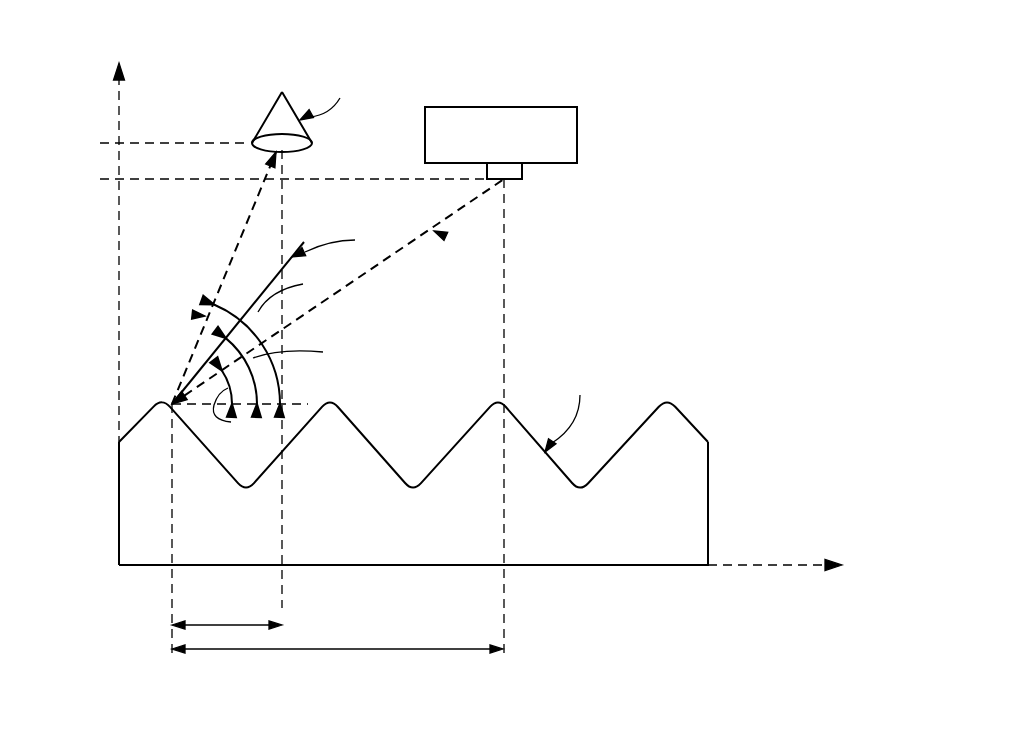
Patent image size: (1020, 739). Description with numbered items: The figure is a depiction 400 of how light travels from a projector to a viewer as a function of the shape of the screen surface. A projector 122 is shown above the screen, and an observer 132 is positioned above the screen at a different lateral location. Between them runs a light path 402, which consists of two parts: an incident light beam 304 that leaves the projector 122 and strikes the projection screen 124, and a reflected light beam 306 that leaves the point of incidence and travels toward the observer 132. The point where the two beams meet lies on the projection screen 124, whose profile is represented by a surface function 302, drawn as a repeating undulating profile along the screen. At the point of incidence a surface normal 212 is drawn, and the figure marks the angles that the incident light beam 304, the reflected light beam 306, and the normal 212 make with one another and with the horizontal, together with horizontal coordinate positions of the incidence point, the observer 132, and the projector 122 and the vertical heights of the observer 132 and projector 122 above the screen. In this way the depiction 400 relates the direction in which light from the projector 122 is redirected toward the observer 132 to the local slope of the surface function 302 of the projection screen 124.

The depiction 400 is at (163, 35).
The observer 132 is at (265, 118).
The projector 122 is at (543, 165).
The reflected light beam 306 is at (247, 222).
The incident light beam 304 is at (362, 285).
The surface normal 212 is at (267, 287).
The light path 402 is at (192, 313).
The surface function 302 is at (212, 470).
The projection screen 124 is at (468, 483).